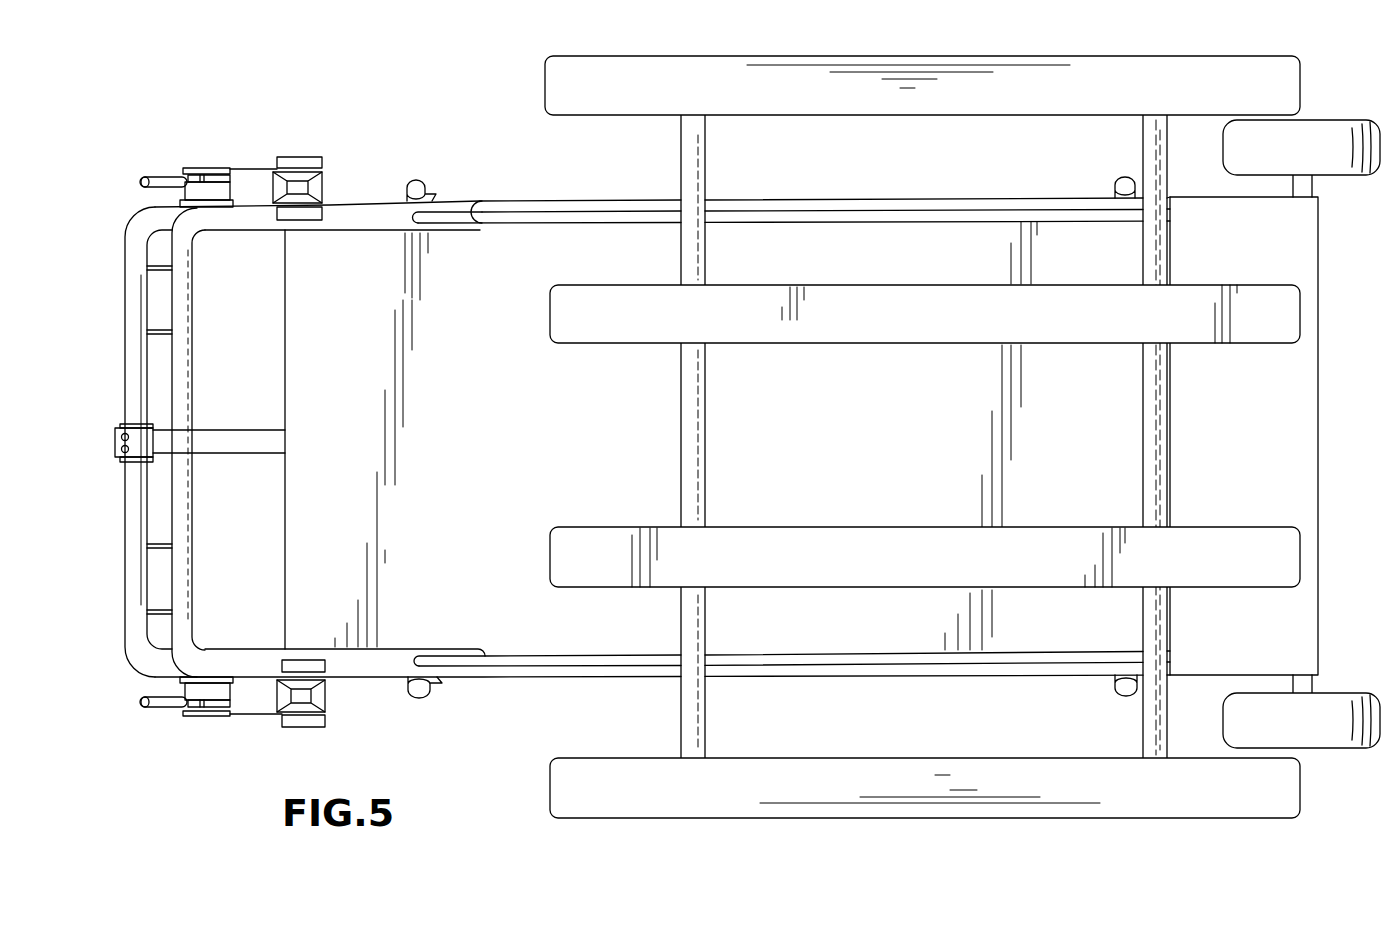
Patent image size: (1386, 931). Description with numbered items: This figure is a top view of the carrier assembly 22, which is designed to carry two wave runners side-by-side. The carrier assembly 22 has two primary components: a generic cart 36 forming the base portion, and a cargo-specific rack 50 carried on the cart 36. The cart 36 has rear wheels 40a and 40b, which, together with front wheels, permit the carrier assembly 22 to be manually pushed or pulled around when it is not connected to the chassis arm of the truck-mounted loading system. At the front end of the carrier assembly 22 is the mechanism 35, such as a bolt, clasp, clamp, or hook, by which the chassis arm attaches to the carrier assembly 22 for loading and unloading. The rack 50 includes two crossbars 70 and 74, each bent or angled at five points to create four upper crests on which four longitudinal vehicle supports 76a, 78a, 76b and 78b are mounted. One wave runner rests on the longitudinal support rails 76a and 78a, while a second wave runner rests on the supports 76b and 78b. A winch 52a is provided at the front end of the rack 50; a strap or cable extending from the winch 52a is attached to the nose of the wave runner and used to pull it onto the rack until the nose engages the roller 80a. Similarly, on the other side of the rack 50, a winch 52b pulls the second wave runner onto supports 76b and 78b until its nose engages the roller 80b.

The carrier assembly 22 is at (168, 152).
The mechanism 35 is at (115, 445).
The cart 36 is at (1320, 462).
The rear wheel 40a is at (1373, 666).
The rear wheel 40b is at (1338, 176).
The rack 50 is at (706, 380).
The winch 52a is at (208, 717).
The winch 52b is at (230, 136).
The crossbar 70 is at (706, 468).
The crossbar 74 is at (1167, 443).
The longitudinal vehicle support 76a is at (550, 792).
The longitudinal vehicle support 76b is at (550, 326).
The longitudinal vehicle support 78a is at (550, 566).
The longitudinal vehicle support 78b is at (545, 84).
The roller 80a is at (322, 692).
The roller 80b is at (316, 187).